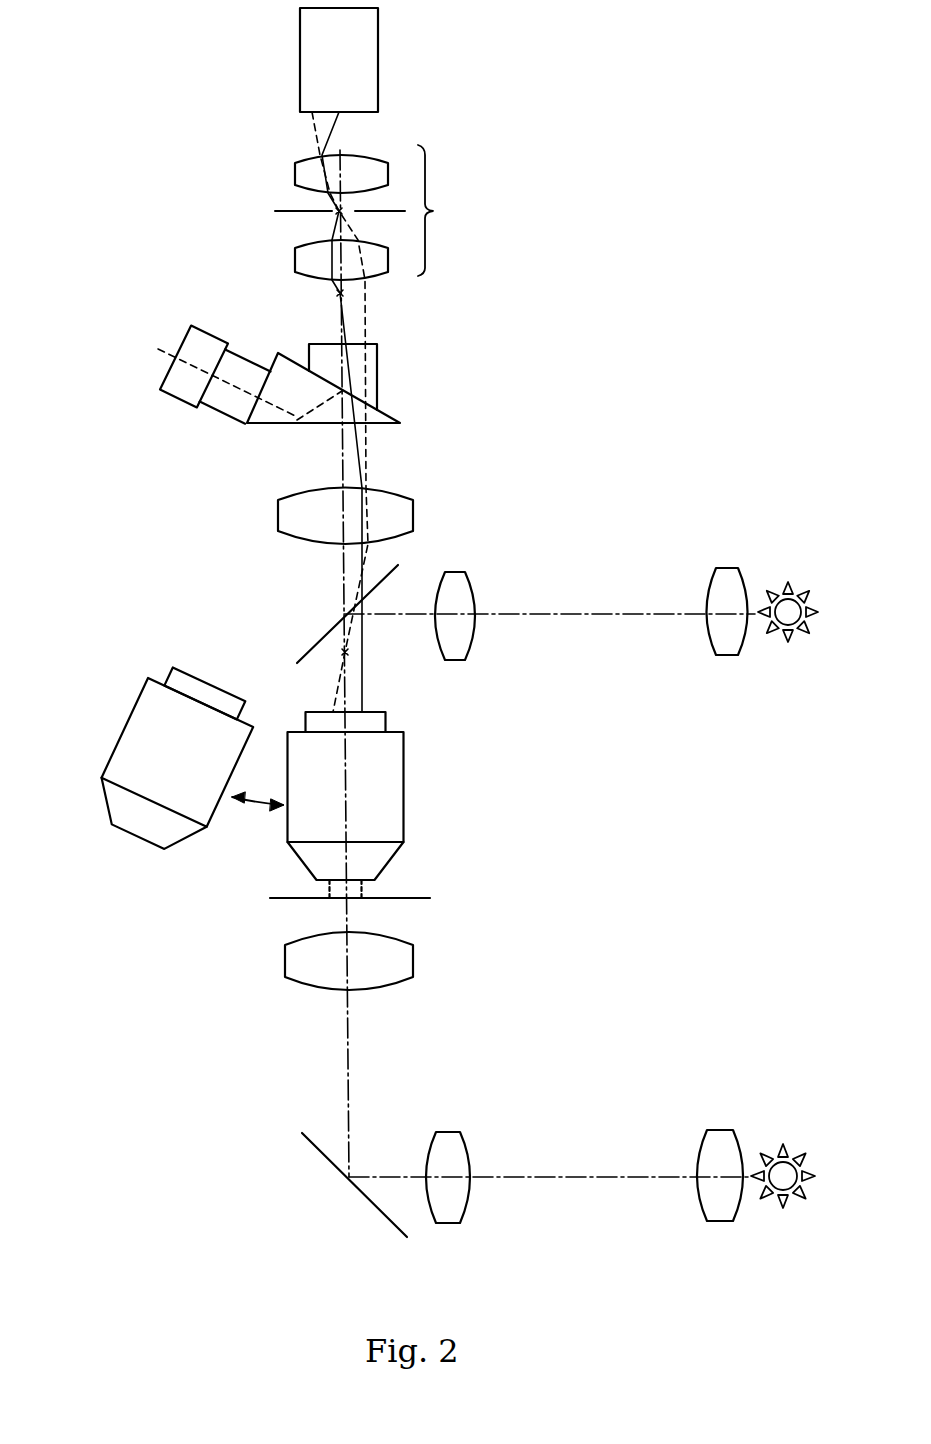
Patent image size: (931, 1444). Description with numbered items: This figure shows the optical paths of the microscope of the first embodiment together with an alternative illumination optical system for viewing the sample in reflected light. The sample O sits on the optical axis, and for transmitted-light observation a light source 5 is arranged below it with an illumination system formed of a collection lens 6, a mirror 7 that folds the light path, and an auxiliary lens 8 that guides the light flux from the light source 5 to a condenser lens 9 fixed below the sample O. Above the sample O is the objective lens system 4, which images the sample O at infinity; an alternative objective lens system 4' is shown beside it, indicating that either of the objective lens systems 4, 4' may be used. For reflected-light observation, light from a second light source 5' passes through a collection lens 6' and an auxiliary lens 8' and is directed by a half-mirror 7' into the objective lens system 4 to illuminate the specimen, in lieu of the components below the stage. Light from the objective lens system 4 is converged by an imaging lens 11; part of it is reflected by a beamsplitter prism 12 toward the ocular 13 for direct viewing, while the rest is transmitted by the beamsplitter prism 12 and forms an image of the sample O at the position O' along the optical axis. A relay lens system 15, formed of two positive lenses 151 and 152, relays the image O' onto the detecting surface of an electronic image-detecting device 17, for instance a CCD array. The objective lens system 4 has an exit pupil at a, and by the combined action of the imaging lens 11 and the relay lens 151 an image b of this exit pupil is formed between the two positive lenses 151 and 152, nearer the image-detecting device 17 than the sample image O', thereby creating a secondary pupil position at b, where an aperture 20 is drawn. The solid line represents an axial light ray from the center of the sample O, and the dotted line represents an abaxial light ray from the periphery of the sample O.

The objective lens system 4 is at (380, 805).
The objective lens system 4' is at (173, 760).
The light source 5 is at (783, 1215).
The light source 5' is at (788, 572).
The collection lens 6 is at (720, 1208).
The collection lens 6' is at (727, 579).
The mirror 7 is at (354, 1209).
The half-mirror 7' is at (336, 614).
The auxiliary lens 8 is at (448, 1209).
The auxiliary lens 8' is at (455, 582).
The condenser lens 9 is at (413, 960).
The imaging lens 11 is at (405, 505).
The beamsplitter prism 12 is at (275, 423).
The ocular 13 is at (205, 407).
The relay lens system 15 is at (445, 210).
The positive lens 151 is at (297, 268).
The positive lens 152 is at (297, 163).
The electronic image-detecting device 17 is at (372, 62).
The aperture stop 20 is at (290, 211).
The sample O is at (350, 922).
The sample image O' is at (311, 307).
The exit pupil a is at (342, 654).
The image of the exit pupil b is at (332, 212).